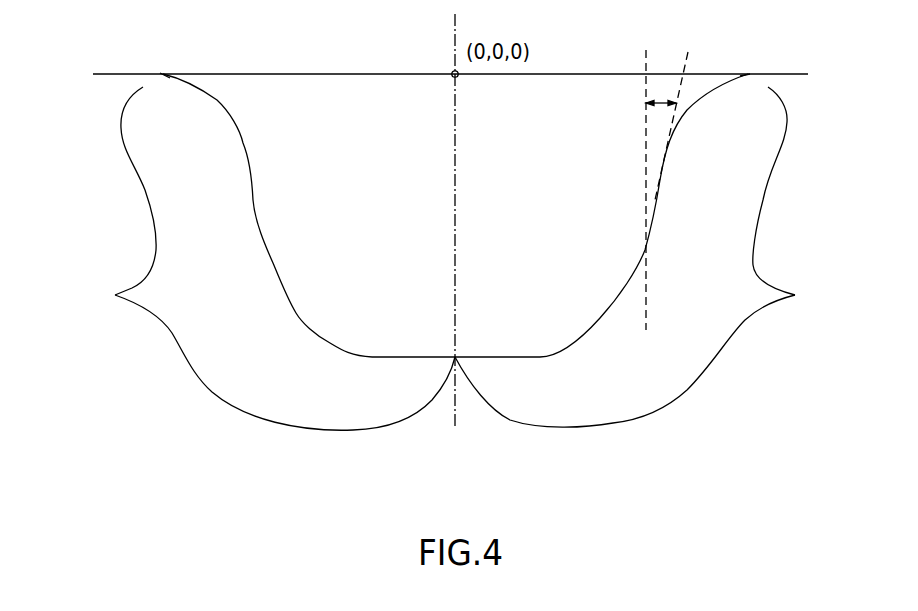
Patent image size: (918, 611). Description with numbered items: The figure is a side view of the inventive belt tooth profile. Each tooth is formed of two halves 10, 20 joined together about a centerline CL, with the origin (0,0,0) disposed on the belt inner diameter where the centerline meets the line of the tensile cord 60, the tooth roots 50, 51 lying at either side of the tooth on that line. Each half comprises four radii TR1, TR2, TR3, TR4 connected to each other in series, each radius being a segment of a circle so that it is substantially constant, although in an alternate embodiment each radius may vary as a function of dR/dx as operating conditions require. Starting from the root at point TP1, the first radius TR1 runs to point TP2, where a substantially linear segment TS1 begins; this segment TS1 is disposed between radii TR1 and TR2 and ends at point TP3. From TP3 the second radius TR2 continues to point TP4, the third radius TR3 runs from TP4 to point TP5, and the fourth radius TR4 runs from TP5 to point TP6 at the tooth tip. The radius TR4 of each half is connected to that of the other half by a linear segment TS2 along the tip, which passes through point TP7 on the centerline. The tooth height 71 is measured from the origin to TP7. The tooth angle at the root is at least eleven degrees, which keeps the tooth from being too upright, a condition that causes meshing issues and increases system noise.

The tooth half 10 is at (268, 258).
The tooth half 20 is at (641, 250).
The tooth root 50 is at (163, 73).
The tooth root 51 is at (748, 73).
The tensile cord 60 is at (530, 76).
The tooth height 71 is at (457, 233).
The profile point TP1 is at (154, 67).
The profile point TP2 is at (250, 139).
The profile point TP3 is at (267, 217).
The profile point TP4 is at (288, 317).
The profile point TP5 is at (328, 355).
The profile point TP6 is at (378, 350).
The profile point TP7 is at (464, 350).
The first radius TR1 is at (209, 107).
The second radius TR2 is at (328, 243).
The third radius TR3 is at (358, 275).
The fourth radius TR4 is at (376, 285).
The linear segment TS1 is at (250, 186).
The linear segment TS2 is at (425, 360).